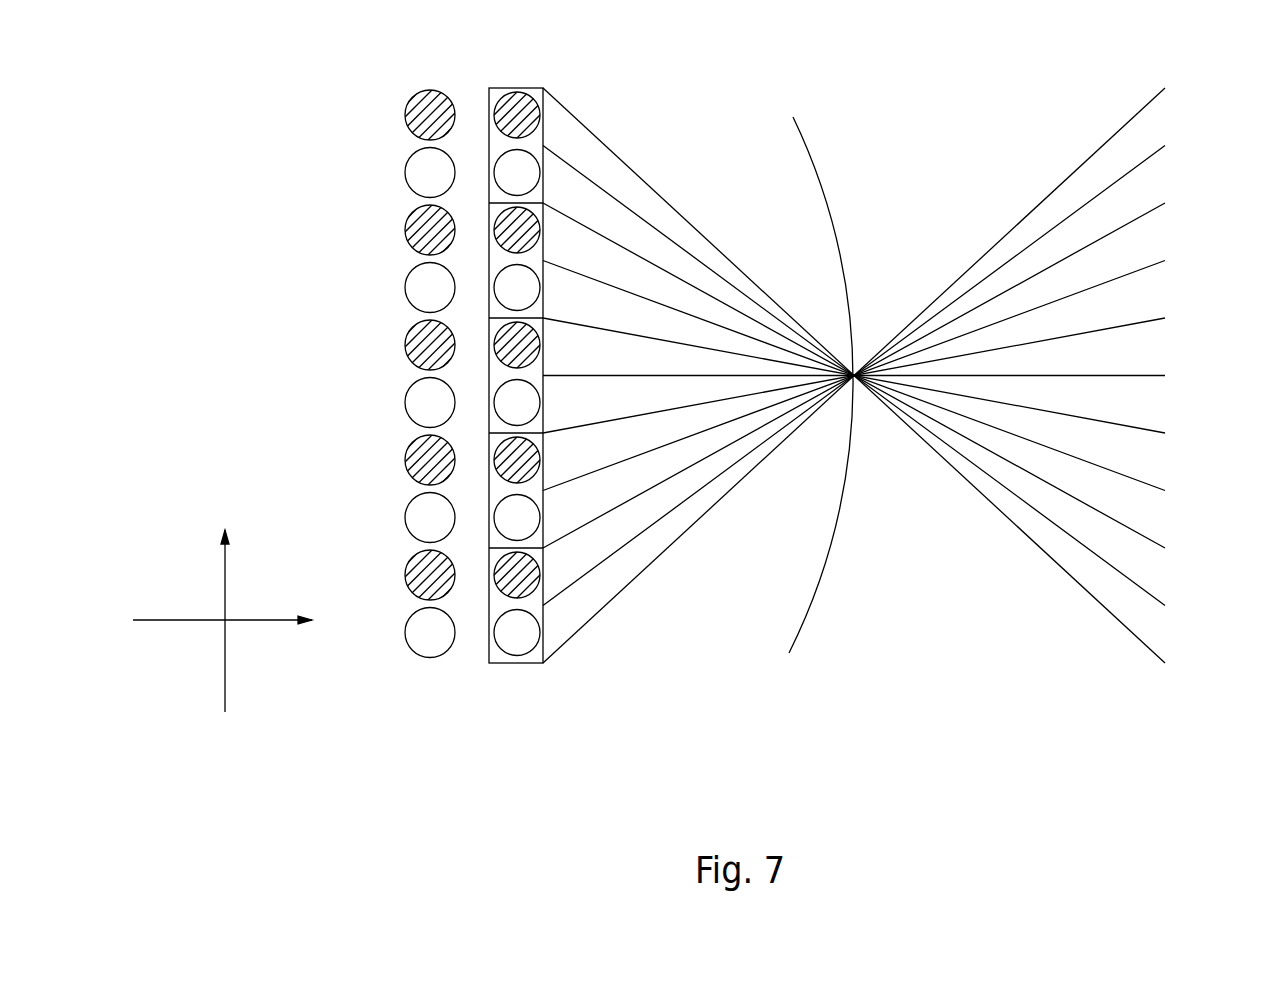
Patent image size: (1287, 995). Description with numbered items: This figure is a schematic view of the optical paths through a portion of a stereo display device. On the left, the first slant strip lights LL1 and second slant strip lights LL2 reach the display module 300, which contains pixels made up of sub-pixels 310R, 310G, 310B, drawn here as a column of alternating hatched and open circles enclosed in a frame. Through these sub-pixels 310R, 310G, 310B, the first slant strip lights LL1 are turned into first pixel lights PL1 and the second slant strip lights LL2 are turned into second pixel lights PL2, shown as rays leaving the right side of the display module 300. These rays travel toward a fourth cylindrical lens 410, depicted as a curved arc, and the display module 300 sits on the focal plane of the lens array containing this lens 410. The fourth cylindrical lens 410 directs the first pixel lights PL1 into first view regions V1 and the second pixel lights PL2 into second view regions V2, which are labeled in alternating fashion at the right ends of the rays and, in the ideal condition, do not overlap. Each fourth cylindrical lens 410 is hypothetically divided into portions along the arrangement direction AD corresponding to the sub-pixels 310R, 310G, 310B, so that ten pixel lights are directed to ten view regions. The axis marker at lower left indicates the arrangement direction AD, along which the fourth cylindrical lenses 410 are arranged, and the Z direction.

The first slant strip light LL1 is at (408, 102).
The second slant strip light LL2 is at (408, 170).
The first pixel light PL1 is at (527, 92).
The second pixel light PL2 is at (542, 165).
The display module 300 is at (527, 411).
The red sub-pixel 310R is at (527, 411).
The green sub-pixel 310G is at (527, 411).
The blue sub-pixel 310B is at (527, 411).
The fourth cylindrical lens 410 is at (810, 612).
The first view region V1 is at (874, 396).
The second view region V2 is at (874, 375).
The arrangement direction AD is at (223, 607).
The Z-axis direction Z is at (235, 621).